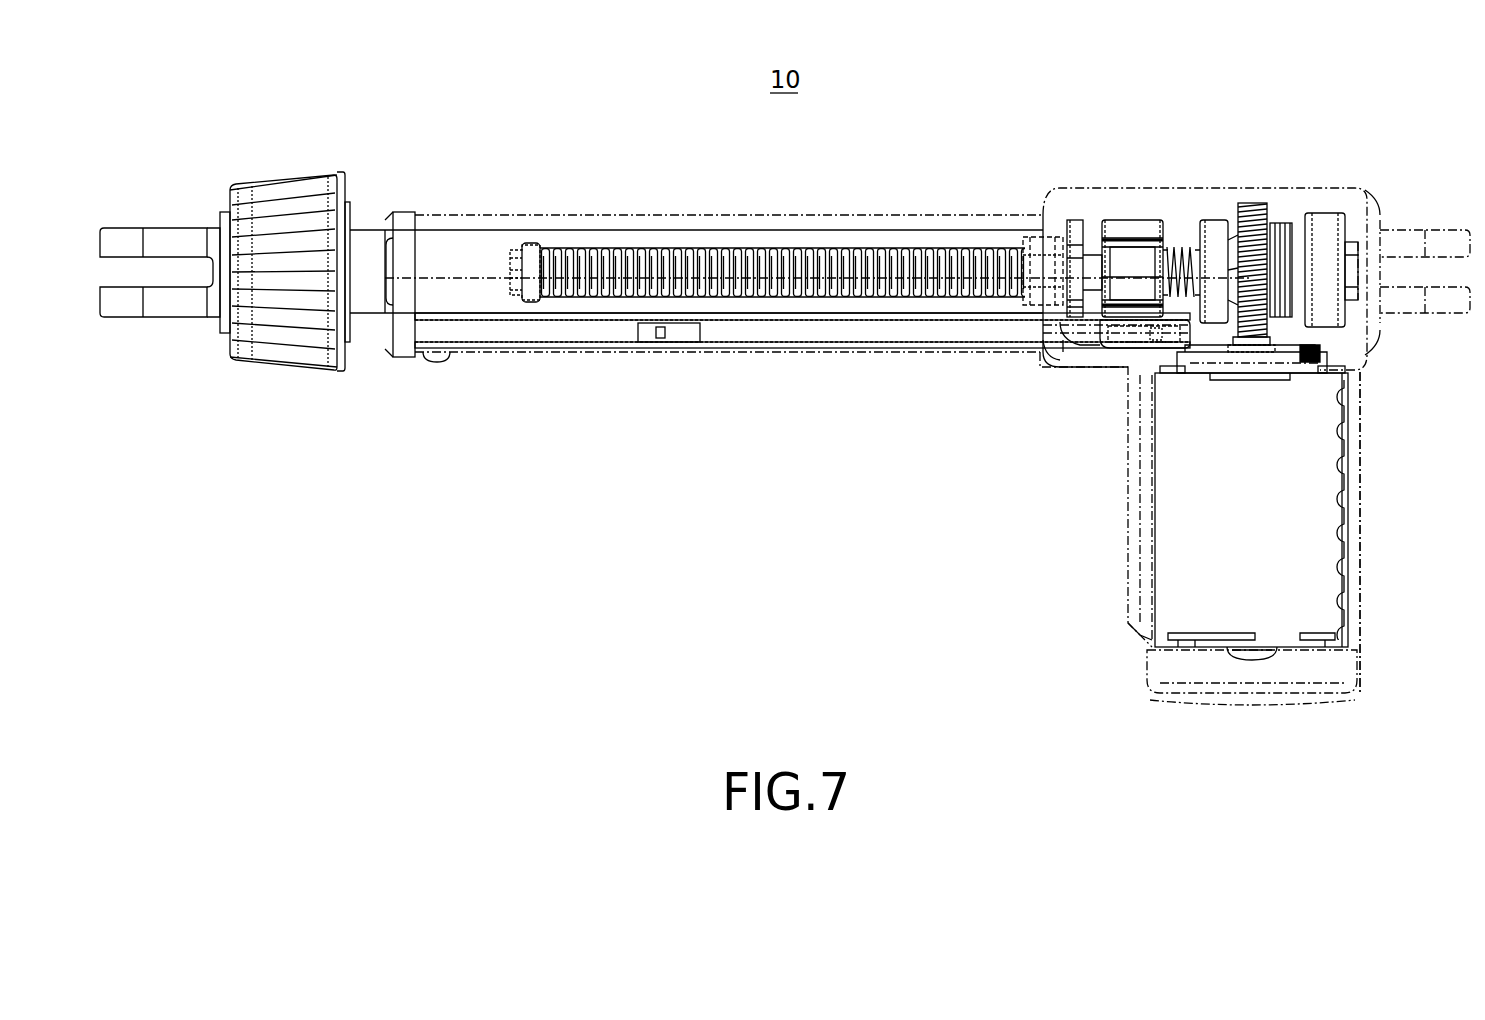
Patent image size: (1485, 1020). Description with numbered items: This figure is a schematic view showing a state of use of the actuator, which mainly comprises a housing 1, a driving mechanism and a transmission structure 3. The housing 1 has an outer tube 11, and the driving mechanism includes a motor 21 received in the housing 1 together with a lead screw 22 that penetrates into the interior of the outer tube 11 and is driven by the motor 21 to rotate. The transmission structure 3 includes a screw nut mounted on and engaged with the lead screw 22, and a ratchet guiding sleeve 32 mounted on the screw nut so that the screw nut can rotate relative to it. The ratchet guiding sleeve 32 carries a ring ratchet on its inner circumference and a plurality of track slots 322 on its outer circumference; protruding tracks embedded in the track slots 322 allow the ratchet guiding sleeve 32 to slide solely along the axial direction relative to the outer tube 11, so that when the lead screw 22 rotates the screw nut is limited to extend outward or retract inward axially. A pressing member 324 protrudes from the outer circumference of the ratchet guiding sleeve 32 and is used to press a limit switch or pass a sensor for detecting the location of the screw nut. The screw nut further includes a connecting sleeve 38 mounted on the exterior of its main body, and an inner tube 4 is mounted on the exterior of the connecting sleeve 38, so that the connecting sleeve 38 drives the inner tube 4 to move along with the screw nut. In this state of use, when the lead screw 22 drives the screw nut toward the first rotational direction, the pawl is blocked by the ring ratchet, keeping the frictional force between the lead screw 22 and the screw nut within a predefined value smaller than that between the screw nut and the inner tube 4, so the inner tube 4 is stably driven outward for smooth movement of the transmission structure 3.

The housing 1 is at (1365, 545).
The outer tube 11 is at (604, 220).
The motor 21 is at (1178, 527).
The lead screw 22 is at (692, 250).
The transmission structure 3 is at (1087, 208).
The ratchet guiding sleeve 32 is at (1133, 220).
The track slots 322 is at (1145, 243).
The pressing member 324 is at (1118, 345).
The connecting sleeve 38 is at (1032, 233).
The inner tube 4 is at (460, 235).